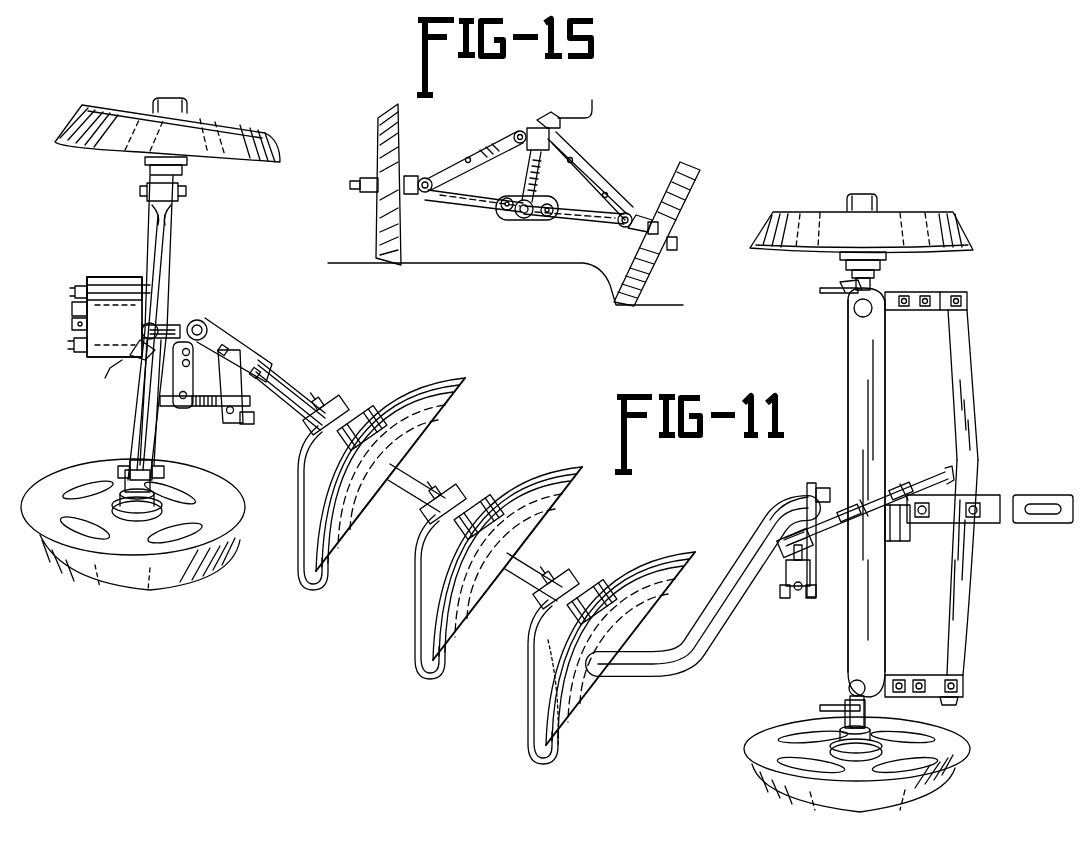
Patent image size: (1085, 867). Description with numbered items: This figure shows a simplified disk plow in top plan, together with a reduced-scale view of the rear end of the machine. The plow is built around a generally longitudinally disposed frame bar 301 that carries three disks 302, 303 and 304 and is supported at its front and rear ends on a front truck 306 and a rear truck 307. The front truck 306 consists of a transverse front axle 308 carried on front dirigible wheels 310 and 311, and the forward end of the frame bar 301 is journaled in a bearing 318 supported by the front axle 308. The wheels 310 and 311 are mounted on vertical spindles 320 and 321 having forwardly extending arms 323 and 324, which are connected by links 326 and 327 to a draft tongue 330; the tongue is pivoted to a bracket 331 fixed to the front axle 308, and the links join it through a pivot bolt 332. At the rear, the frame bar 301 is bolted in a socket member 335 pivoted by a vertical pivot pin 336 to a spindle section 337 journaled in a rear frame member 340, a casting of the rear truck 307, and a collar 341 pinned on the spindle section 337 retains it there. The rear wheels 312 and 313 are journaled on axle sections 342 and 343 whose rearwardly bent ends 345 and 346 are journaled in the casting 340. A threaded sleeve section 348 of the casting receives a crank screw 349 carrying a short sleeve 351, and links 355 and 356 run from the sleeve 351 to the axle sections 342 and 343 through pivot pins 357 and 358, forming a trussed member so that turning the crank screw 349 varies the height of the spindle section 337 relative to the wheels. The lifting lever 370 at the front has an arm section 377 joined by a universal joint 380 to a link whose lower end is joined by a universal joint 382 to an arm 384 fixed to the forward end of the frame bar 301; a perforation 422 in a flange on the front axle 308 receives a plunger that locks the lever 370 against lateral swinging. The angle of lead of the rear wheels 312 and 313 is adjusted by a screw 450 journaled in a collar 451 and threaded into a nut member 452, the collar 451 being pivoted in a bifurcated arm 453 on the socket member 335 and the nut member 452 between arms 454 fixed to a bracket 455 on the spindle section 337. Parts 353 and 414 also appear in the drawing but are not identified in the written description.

In FIG. 11, the frame bar 301 is at (680, 662).
In FIG. 11, the disk 302 is at (420, 380).
In FIG. 11, the disk 303 is at (538, 473).
In FIG. 11, the disk 304 is at (660, 550).
In FIG. 11, the front truck 306 is at (846, 329).
In FIG. 15, the rear truck 307 is at (480, 145).
In FIG. 11, the rear truck 307 is at (66, 340).
In FIG. 11, the front axle 308 is at (880, 358).
In FIG. 11, the front dirigible wheel 310 is at (958, 750).
In FIG. 11, the front dirigible wheel 311 is at (950, 233).
In FIG. 15, the rear wheel 312 is at (378, 133).
In FIG. 11, the rear wheel 312 is at (120, 120).
In FIG. 15, the rear wheel 313 is at (650, 272).
In FIG. 11, the rear wheel 313 is at (160, 577).
In FIG. 11, the bearing 318 is at (822, 495).
In FIG. 11, the vertical spindle 320 is at (852, 281).
In FIG. 11, the vertical spindle 321 is at (824, 714).
In FIG. 11, the forwardly extending arm 323 is at (900, 292).
In FIG. 11, the forwardly extending arm 324 is at (910, 678).
In FIG. 11, the link 326 is at (965, 345).
In FIG. 11, the link 327 is at (965, 585).
In FIG. 11, the draft tongue 330 is at (1036, 500).
In FIG. 11, the bracket 331 is at (903, 528).
In FIG. 11, the pivot bolt 332 is at (976, 503).
In FIG. 11, the socket member 335 is at (255, 344).
In FIG. 11, the vertical pivot pin 336 is at (207, 326).
In FIG. 15, the spindle section 337 is at (521, 219).
In FIG. 11, the spindle section 337 is at (72, 324).
In FIG. 15, the rear frame member 340 is at (535, 222).
In FIG. 11, the rear frame member 340 is at (100, 283).
In FIG. 11, the collar 341 is at (72, 308).
In FIG. 15, the axle section 342 is at (468, 200).
In FIG. 11, the axle section 342 is at (147, 280).
In FIG. 15, the axle section 343 is at (590, 224).
In FIG. 11, the axle section 343 is at (138, 405).
In FIG. 15, the bent end 345 is at (505, 198).
In FIG. 11, the bent end 345 is at (74, 291).
In FIG. 15, the bent end 346 is at (555, 205).
In FIG. 11, the bent end 346 is at (78, 355).
In FIG. 15, the threaded sleeve section 348 is at (538, 185).
In FIG. 15, the crank screw 349 is at (525, 131).
In FIG. 11, the crank screw 349 is at (150, 338).
In FIG. 15, the short sleeve 351 is at (552, 118).
In FIG. 15, the upper link 353 is at (565, 147).
In FIG. 15, the link 355 is at (462, 167).
In FIG. 11, the link 355 is at (150, 231).
In FIG. 15, the link 356 is at (598, 193).
In FIG. 11, the link 356 is at (130, 444).
In FIG. 15, the pivot pin 357 is at (424, 178).
In FIG. 11, the pivot pin 357 is at (180, 192).
In FIG. 15, the pivot pin 358 is at (628, 213).
In FIG. 11, the pivot pin 358 is at (162, 470).
In FIG. 11, the lever 370 is at (893, 488).
In FIG. 11, the arm section 377 is at (790, 518).
In FIG. 11, the universal joint 380 is at (790, 572).
In FIG. 11, the universal joint 382 is at (794, 598).
In FIG. 11, the arm 384 is at (808, 565).
In FIG. 11, the scraper 414 is at (576, 688).
In FIG. 11, the perforation 422 is at (834, 488).
In FIG. 11, the screw 450 is at (210, 410).
In FIG. 11, the collar 451 is at (250, 428).
In FIG. 11, the nut member 452 is at (178, 410).
In FIG. 11, the bifurcated arm 453 is at (246, 415).
In FIG. 11, the arms 454 is at (228, 331).
In FIG. 11, the bracket 455 is at (172, 322).